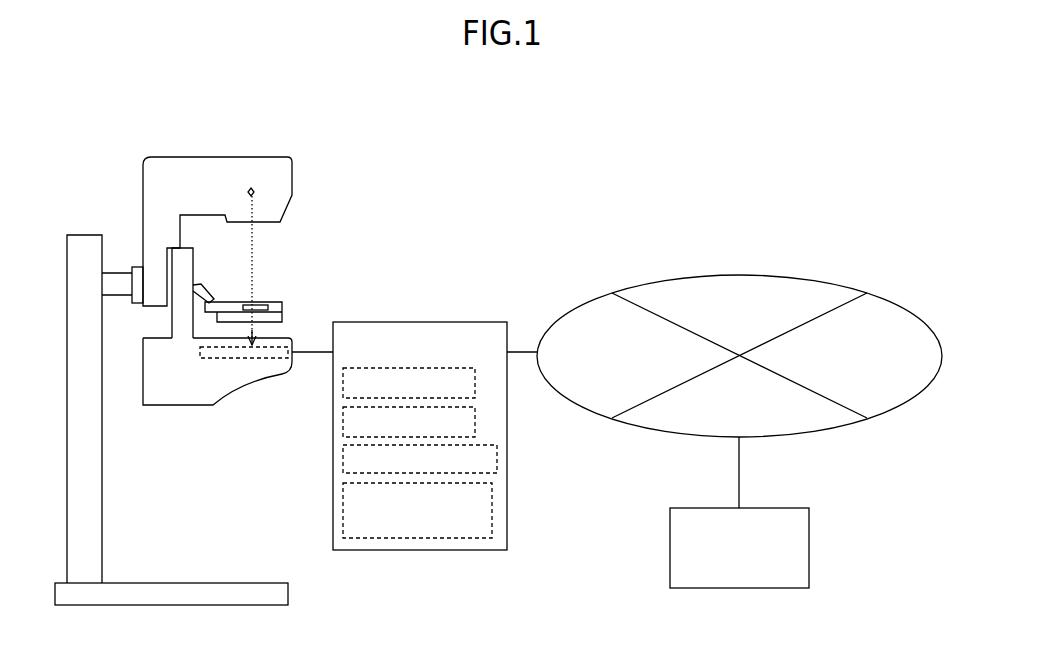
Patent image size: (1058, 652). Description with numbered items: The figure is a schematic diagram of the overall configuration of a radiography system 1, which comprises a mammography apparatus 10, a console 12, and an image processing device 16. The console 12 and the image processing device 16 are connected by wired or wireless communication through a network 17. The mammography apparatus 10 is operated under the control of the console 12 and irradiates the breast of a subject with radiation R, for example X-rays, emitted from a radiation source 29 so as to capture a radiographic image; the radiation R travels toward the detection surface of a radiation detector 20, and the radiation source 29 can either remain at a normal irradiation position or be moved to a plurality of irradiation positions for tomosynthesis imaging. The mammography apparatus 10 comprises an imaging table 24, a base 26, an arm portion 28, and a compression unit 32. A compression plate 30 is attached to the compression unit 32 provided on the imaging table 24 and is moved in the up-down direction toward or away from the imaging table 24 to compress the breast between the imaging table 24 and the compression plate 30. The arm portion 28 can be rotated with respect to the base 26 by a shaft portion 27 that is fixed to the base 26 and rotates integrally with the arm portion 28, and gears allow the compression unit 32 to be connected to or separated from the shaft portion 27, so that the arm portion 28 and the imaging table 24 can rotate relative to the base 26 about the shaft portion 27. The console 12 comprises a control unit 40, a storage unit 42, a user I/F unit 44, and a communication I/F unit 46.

The radiography system 1 is at (858, 131).
The mammography apparatus 10 is at (154, 102).
The console 12 is at (457, 322).
The image processing device 16 is at (810, 544).
The network 17 is at (920, 317).
The radiation detector 20 is at (265, 358).
The imaging table 24 is at (240, 387).
The base 26 is at (86, 235).
The shaft portion 27 is at (118, 273).
The arm portion 28 is at (182, 158).
The radiation source 29 is at (252, 190).
The radiation R is at (265, 270).
The compression plate 30 is at (283, 310).
The compression unit 32 is at (210, 268).
The control unit 40 is at (343, 383).
The storage unit 42 is at (343, 422).
The user I/F unit 44 is at (343, 460).
The communication I/F unit 46 is at (343, 510).